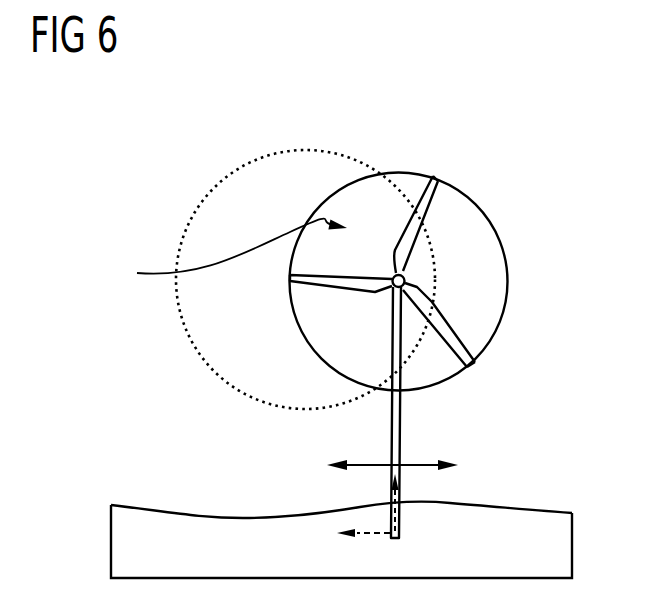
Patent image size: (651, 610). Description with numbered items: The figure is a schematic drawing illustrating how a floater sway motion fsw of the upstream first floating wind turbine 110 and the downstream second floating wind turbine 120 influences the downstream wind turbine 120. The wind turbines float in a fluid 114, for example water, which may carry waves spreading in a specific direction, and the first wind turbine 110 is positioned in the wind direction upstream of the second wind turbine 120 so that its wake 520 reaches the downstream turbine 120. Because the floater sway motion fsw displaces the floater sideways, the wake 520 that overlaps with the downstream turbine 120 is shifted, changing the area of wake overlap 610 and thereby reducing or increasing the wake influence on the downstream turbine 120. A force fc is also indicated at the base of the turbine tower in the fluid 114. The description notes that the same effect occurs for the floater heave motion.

The first floating wind turbine 110 is at (276, 129).
The second floating wind turbine 120 is at (508, 282).
The wake 520 is at (174, 161).
The area of wake overlap 610 is at (219, 256).
The fluid 114 is at (111, 540).
The floater sway motion fsw is at (415, 462).
The control force fc is at (399, 512).